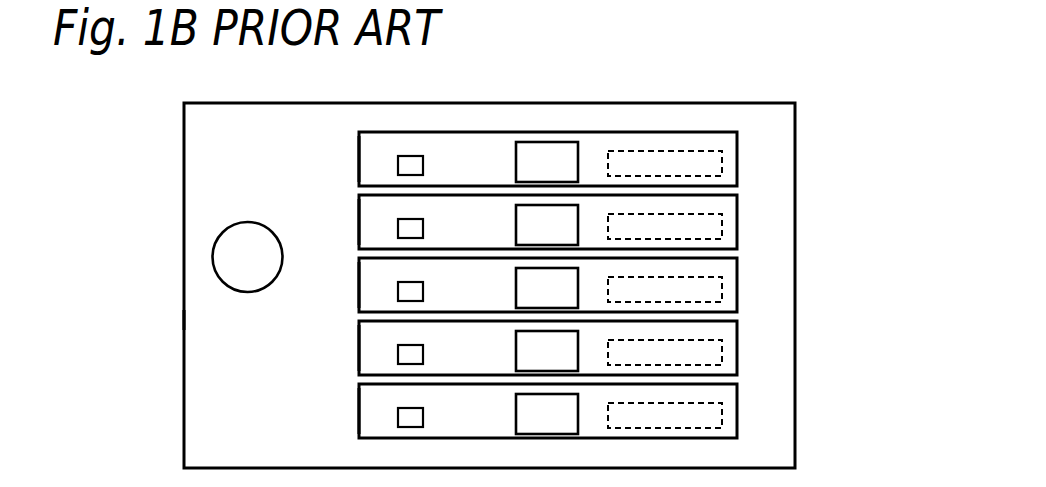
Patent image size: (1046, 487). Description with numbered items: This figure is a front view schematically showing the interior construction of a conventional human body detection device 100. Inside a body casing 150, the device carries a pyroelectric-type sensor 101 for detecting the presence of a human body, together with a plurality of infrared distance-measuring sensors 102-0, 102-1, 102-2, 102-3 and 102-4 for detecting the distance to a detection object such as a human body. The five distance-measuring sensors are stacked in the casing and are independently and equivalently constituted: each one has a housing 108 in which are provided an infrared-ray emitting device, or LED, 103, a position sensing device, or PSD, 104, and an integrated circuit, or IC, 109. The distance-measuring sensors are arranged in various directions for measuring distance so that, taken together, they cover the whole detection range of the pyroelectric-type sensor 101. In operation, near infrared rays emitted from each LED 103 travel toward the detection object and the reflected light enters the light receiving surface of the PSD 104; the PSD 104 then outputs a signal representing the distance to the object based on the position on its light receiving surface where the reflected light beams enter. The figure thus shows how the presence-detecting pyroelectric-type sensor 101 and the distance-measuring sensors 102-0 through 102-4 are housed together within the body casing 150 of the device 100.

The human body detection device 100 is at (170, 185).
The pyroelectric-type sensor 101 is at (228, 288).
The body casing 150 is at (184, 273).
The infrared distance-measuring sensor 102-0 is at (741, 165).
The infrared distance-measuring sensor 102-1 is at (741, 228).
The infrared distance-measuring sensor 102-2 is at (741, 291).
The infrared distance-measuring sensor 102-3 is at (741, 354).
The infrared distance-measuring sensor 102-4 is at (741, 417).
The infrared-ray emitting device (LED) 103 is at (398, 165).
The position sensing device (PSD) 104 is at (709, 151).
The housing 108 is at (359, 150).
The integrated circuit (IC) 109 is at (516, 160).